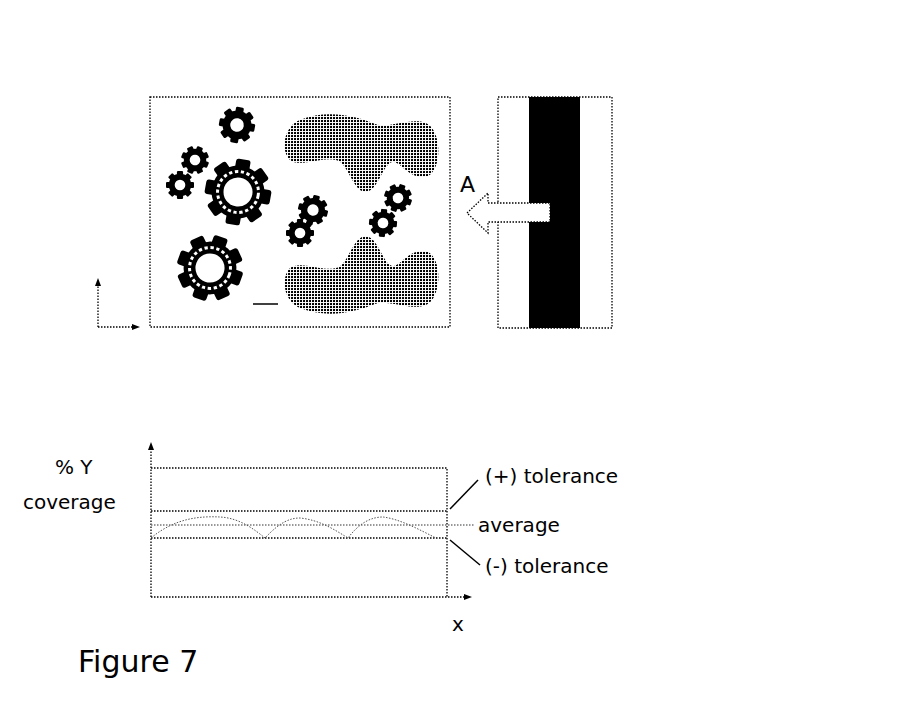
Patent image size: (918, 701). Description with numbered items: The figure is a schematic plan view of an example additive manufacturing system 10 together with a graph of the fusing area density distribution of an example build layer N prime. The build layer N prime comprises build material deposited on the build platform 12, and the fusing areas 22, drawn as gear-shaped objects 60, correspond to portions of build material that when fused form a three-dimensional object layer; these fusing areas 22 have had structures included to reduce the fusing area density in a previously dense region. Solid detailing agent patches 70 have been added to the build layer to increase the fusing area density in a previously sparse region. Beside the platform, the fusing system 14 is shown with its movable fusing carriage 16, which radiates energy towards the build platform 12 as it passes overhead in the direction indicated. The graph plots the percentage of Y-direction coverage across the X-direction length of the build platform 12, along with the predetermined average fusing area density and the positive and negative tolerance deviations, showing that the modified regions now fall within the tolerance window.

The additive manufacturing system 10 is at (178, 70).
The build platform 12 is at (284, 97).
The fusing system 14 is at (640, 216).
The movable fusing carriage 16 is at (542, 97).
The fusing area 22 is at (183, 253).
The pigment particles 60 is at (181, 152).
The solid detailing agent patches 70 is at (382, 130).